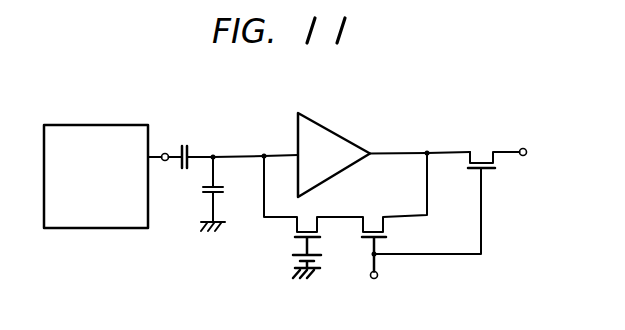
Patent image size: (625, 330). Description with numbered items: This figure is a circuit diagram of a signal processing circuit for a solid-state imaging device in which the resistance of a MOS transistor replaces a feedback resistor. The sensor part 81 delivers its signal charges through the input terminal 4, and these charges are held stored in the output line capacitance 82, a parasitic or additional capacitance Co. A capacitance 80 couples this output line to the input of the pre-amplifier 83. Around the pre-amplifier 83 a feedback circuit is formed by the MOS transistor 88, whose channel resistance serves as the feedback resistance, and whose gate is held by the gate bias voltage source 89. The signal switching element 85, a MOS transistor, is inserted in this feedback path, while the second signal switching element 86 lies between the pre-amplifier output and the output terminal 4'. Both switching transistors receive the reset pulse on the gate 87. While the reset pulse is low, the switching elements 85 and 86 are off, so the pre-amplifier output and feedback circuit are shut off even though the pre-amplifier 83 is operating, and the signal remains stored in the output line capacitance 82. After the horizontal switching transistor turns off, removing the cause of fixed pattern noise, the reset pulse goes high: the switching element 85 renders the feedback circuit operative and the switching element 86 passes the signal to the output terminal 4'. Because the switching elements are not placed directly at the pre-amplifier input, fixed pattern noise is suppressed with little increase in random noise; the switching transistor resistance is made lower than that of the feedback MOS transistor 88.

The input terminal 4 is at (166, 180).
The output terminal 4' is at (539, 174).
The capacitance 80 is at (184, 144).
The sensor part 81 is at (107, 228).
The output line capacitance 82 is at (225, 190).
The pre-amplifier 83 is at (343, 135).
The signal switching element 85 is at (372, 230).
The signal switching element 86 is at (483, 150).
The gate 87 is at (378, 278).
The MOS transistor 88 is at (309, 224).
The gate bias voltage source 89 is at (317, 258).